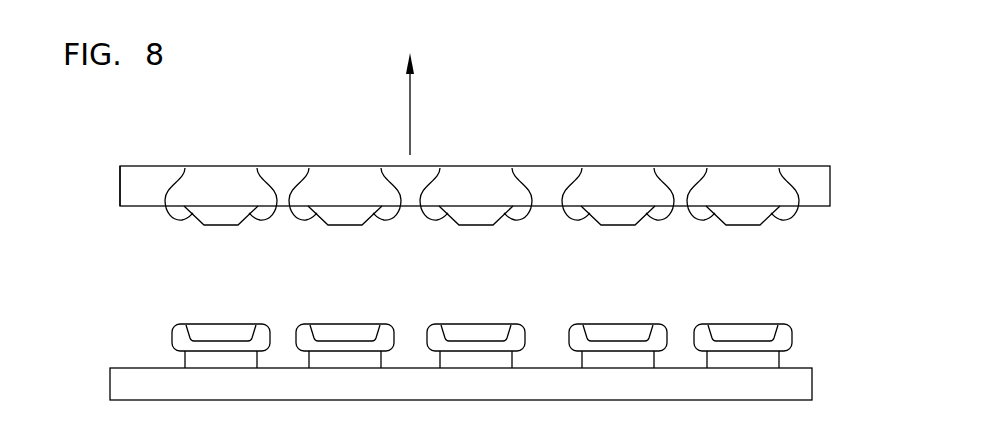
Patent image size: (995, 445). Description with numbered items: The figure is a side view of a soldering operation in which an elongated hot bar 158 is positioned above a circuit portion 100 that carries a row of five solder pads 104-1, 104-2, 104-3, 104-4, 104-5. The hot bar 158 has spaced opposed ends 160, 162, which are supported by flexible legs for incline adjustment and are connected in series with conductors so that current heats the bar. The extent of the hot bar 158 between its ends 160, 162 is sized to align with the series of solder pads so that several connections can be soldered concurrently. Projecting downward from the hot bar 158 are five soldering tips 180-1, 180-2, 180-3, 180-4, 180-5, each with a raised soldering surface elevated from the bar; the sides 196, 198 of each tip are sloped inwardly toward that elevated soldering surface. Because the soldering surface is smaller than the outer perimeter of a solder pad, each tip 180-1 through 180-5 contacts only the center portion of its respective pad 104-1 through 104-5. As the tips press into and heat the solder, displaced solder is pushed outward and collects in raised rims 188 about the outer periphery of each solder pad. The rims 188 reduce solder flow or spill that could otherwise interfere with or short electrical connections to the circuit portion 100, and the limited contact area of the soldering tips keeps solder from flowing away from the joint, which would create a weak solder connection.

The circuit portion 100 is at (793, 388).
The solder pad 104-1 is at (694, 337).
The solder pad 104-2 is at (569, 337).
The solder pad 104-3 is at (427, 337).
The solder pad 104-4 is at (296, 337).
The solder pad 104-5 is at (172, 337).
The raised rim 188 is at (175, 327).
The hot bar 158 is at (491, 160).
The end of hot bar 160 is at (831, 188).
The end of hot bar 162 is at (120, 188).
The soldering tip 180-1 is at (743, 200).
The soldering tip 180-2 is at (618, 200).
The soldering tip 180-3 is at (476, 200).
The soldering tip 180-4 is at (345, 200).
The soldering tip 180-5 is at (221, 200).
The side of soldering tip 196 is at (185, 168).
The side of soldering tip 198 is at (257, 168).